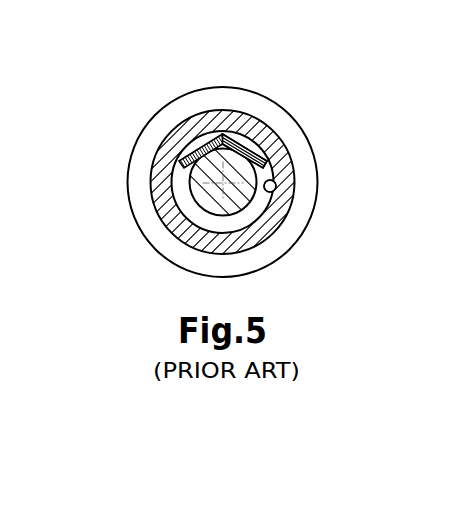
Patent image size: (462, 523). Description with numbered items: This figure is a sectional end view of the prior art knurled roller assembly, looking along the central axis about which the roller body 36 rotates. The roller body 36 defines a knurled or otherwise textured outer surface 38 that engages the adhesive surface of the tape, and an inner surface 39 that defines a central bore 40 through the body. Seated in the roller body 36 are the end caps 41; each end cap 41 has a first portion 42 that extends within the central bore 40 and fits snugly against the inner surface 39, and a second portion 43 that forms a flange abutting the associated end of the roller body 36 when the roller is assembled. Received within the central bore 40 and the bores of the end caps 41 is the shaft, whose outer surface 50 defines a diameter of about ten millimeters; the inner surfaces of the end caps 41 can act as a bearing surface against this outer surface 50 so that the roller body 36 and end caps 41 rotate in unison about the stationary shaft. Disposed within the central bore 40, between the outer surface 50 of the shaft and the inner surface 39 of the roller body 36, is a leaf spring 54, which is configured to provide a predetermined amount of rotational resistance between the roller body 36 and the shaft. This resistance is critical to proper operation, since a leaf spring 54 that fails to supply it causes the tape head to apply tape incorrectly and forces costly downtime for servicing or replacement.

The roller body 36 is at (196, 120).
The outer surface 38 is at (236, 131).
The inner surface 39 is at (272, 182).
The central bore 40 is at (270, 186).
The end caps 41 is at (300, 108).
The first portion 42 is at (250, 215).
The second portion 43 is at (297, 217).
The outer surface 50 is at (197, 207).
The leaf spring 54 is at (223, 134).